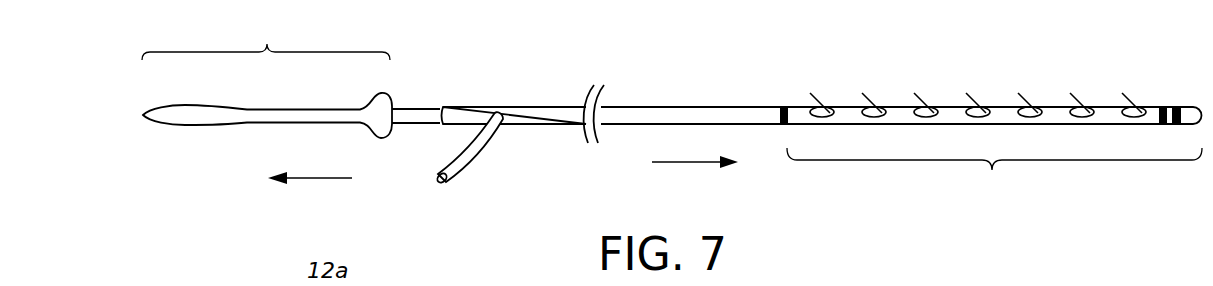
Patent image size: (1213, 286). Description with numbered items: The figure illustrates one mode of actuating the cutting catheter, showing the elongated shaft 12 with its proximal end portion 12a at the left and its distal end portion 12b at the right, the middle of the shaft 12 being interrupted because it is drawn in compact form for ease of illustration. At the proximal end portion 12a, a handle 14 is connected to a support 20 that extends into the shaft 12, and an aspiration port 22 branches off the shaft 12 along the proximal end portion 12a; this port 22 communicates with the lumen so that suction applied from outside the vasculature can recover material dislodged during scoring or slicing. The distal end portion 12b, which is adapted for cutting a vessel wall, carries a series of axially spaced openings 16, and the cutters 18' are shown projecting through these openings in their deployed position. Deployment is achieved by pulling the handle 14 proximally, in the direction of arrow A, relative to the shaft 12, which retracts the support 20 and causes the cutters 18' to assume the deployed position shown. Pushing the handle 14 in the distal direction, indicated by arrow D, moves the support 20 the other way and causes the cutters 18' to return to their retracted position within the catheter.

The shaft 12 is at (533, 107).
The proximal end portion 12a is at (266, 37).
The distal end portion 12b is at (994, 174).
The handle 14 is at (243, 125).
The openings 16 is at (822, 125).
The cutters in deployed position 18' is at (978, 81).
The support 20 is at (415, 124).
The aspiration port 22 is at (477, 160).
The proximal direction arrow A is at (312, 180).
The distal direction arrow D is at (692, 163).